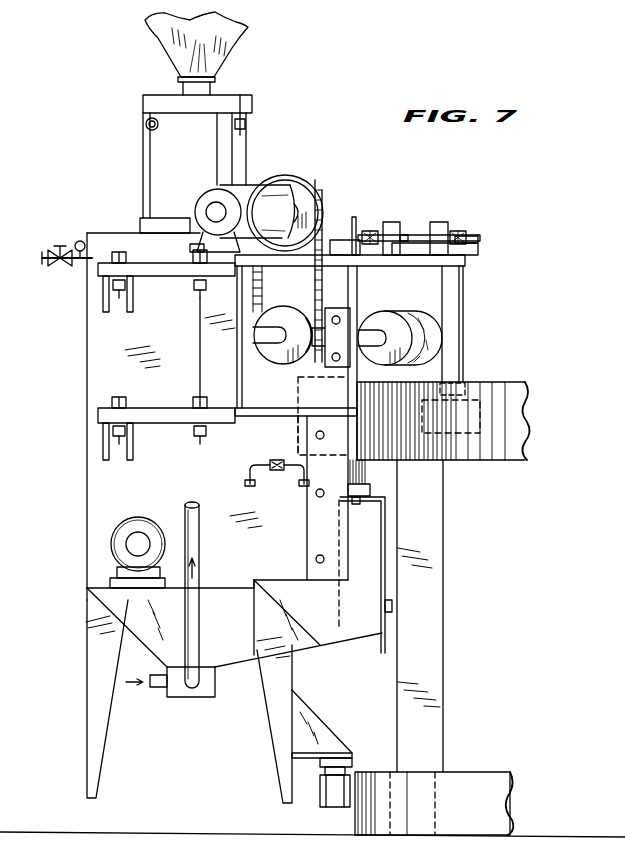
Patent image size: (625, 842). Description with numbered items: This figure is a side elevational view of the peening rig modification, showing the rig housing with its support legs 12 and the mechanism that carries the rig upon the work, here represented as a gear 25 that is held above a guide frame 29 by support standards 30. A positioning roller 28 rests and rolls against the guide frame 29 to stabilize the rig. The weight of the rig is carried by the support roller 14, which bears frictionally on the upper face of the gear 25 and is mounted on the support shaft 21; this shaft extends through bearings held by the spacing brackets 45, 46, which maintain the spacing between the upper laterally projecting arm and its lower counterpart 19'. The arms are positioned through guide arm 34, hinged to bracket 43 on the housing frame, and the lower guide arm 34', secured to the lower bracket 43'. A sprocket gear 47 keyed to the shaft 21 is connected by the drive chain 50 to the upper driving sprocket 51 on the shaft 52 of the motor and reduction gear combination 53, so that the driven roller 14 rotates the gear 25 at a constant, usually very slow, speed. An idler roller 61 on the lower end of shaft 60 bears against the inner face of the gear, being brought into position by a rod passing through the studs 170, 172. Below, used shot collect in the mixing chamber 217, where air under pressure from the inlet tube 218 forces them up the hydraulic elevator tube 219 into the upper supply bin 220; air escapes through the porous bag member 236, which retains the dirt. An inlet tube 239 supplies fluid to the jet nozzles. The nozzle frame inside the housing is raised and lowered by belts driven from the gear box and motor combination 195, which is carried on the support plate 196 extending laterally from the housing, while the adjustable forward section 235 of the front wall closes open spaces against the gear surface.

The porous bag member 236 is at (234, 44).
The hydraulic elevator tube 219 is at (146, 124).
The upper supply bin 220 is at (150, 163).
The motor and reduction gear combination 53 is at (258, 186).
The upper driving sprocket 51 is at (312, 192).
The motor shaft 52 is at (300, 216).
The stud 170 is at (393, 222).
The stud 172 is at (440, 222).
The inlet tube 239 is at (50, 254).
The bracket 43 is at (87, 283).
The guide arm 34 is at (180, 280).
The spacing bracket 45 is at (200, 384).
The lower bracket 43' is at (86, 432).
The lower guide arm 34' is at (180, 430).
The drive chain 50 is at (262, 300).
The sprocket gear 47 is at (282, 370).
The spacing bracket 46 is at (354, 310).
The support shaft 21 is at (366, 334).
The support roller 14 is at (432, 334).
The shaft 60 is at (462, 288).
The gear 25 is at (498, 380).
The idler roller 61 is at (484, 413).
The support standard 30 is at (436, 585).
The lower laterally projecting arm 19' is at (278, 435).
The forward section 235 is at (362, 506).
The gear box and motor combination 195 is at (142, 504).
The support plate 196 is at (86, 588).
The mixing chamber 217 is at (180, 697).
The inlet tube 218 is at (158, 674).
The support legs 12 is at (103, 740).
The guide frame 29 is at (466, 780).
The positioning roller 28 is at (330, 806).